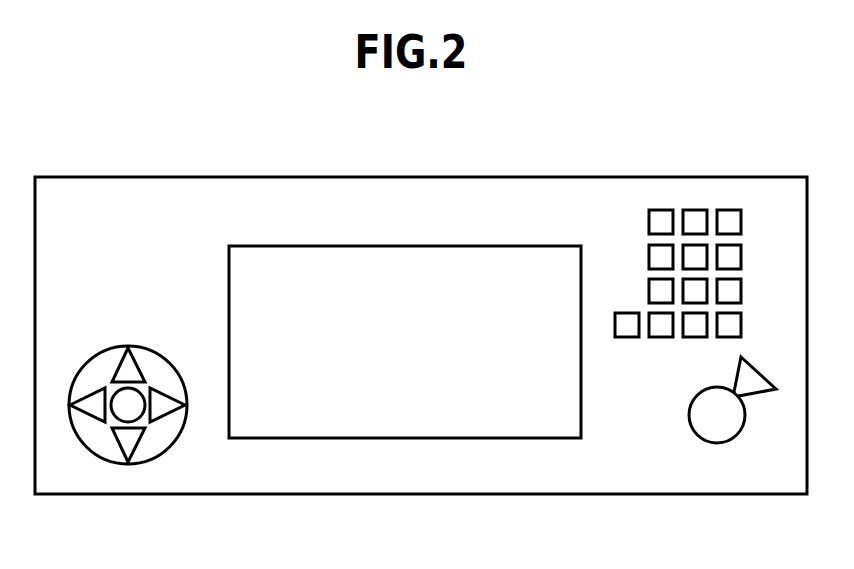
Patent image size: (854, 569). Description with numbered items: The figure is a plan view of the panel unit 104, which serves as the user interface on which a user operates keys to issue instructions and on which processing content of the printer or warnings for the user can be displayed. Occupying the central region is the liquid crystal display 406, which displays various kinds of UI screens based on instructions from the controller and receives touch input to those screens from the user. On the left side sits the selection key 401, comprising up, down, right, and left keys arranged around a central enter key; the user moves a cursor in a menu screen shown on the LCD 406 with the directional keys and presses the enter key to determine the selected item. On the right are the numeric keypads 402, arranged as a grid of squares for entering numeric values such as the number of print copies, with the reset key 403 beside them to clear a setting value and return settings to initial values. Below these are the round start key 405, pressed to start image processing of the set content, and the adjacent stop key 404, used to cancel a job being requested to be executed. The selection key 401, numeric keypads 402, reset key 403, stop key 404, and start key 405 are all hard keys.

The panel unit 104 is at (312, 176).
The selection key 401 is at (103, 458).
The numeric keypads 402 is at (660, 210).
The reset key 403 is at (627, 313).
The stop key 404 is at (759, 392).
The start key 405 is at (717, 443).
The liquid crystal display 406 is at (415, 246).